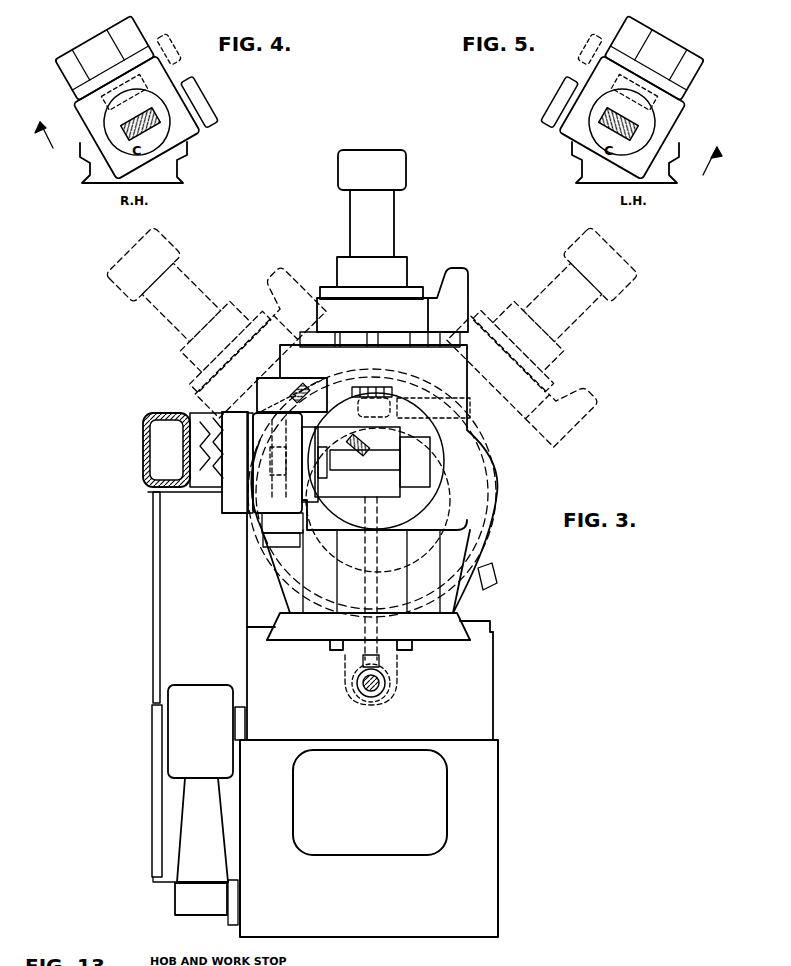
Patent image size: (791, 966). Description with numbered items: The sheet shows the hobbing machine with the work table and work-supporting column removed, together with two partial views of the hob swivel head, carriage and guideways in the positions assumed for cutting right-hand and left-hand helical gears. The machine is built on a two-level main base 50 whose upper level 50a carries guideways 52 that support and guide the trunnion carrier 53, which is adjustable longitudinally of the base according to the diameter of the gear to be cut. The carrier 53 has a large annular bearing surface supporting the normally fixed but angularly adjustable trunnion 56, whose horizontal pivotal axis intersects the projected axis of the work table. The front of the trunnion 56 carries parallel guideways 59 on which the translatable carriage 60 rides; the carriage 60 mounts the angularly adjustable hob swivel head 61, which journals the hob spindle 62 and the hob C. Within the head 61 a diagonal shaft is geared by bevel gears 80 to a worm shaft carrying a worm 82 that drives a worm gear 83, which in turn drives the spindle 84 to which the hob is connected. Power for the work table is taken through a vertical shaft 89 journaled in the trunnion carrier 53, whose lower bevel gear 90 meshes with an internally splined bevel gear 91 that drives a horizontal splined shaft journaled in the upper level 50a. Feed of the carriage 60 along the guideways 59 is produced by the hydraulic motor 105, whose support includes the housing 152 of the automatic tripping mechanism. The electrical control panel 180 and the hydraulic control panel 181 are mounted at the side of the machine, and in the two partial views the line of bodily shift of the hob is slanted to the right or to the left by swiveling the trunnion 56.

In FIG. 3, the main base 50 is at (489, 815).
In FIG. 3, the upper level of main base 50a is at (484, 713).
In FIG. 3, the guideways 52 is at (474, 629).
In FIG. 3, the trunnion carrier 53 is at (473, 601).
In FIG. 4, the trunnion carrier 53 is at (87, 167).
In FIG. 5, the trunnion carrier 53 is at (677, 168).
In FIG. 3, the trunnion 56 is at (479, 472).
In FIG. 4, the trunnion 56 is at (71, 96).
In FIG. 5, the trunnion 56 is at (691, 97).
In FIG. 3, the guideways 59 is at (314, 565).
In FIG. 4, the guideways 59 is at (73, 63).
In FIG. 5, the guideways 59 is at (688, 67).
In FIG. 3, the carriage 60 is at (458, 514).
In FIG. 4, the carriage 60 is at (92, 117).
In FIG. 5, the carriage 60 is at (672, 125).
In FIG. 3, the hob swivel head 61 is at (384, 524).
In FIG. 3, the hob spindle 62 is at (341, 466).
In FIG. 3, the bevel gears 80 is at (303, 404).
In FIG. 3, the worm 82 is at (272, 463).
In FIG. 4, the worm gear 83 is at (196, 130).
In FIG. 5, the worm gear 83 is at (576, 129).
In FIG. 4, the spindle 84 is at (118, 128).
In FIG. 5, the spindle 84 is at (655, 145).
In FIG. 3, the vertical shaft 89 is at (367, 634).
In FIG. 3, the bevel gear 90 is at (387, 667).
In FIG. 3, the internally splined bevel gear 91 is at (387, 692).
In FIG. 3, the hydraulic motor 105 is at (391, 209).
In FIG. 3, the housing 152 is at (457, 274).
In FIG. 3, the electrical control panel 180 is at (168, 518).
In FIG. 3, the hydraulic control panel 181 is at (170, 805).